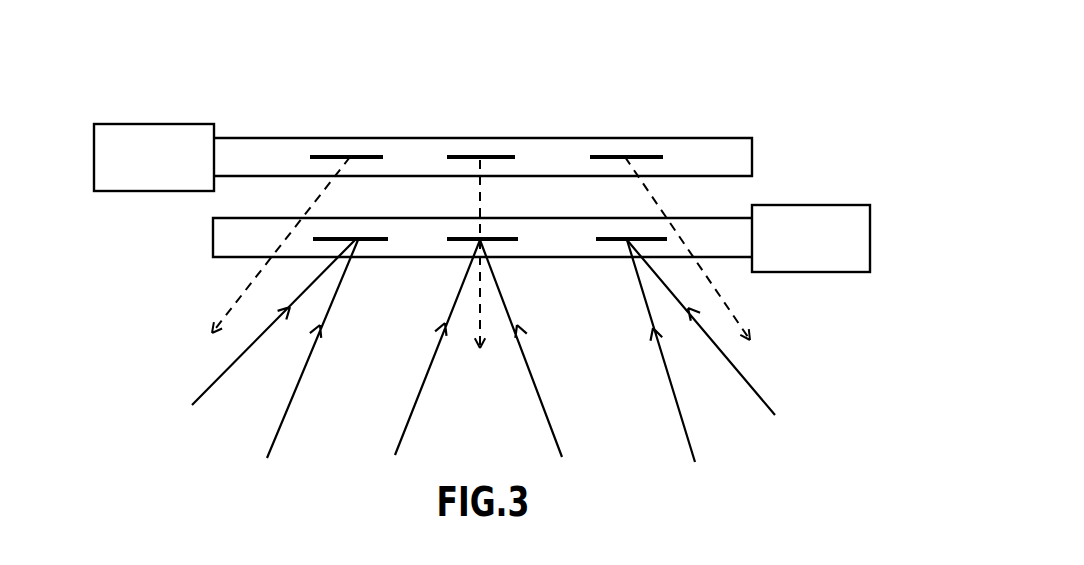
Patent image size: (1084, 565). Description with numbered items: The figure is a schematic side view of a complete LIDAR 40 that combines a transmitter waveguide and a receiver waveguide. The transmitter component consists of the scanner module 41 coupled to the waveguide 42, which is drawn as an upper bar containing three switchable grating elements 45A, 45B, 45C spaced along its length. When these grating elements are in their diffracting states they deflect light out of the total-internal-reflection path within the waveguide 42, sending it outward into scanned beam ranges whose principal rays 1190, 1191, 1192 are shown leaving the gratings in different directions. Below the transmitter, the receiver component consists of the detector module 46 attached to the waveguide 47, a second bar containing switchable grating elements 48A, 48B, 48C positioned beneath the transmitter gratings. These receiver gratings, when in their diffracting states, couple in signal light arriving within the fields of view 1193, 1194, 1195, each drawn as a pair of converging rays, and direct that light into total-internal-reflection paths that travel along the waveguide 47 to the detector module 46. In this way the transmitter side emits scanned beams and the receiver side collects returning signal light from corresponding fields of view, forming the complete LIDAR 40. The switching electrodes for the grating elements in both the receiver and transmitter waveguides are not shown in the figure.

The LIDAR 40 is at (857, 55).
The scanner module 41 is at (170, 123).
The waveguide 42 is at (753, 167).
The switchable grating element 45A is at (327, 153).
The switchable grating element 45B is at (458, 153).
The switchable grating element 45C is at (608, 153).
The detector module 46 is at (817, 203).
The waveguide 47 is at (210, 232).
The switchable grating element 48A is at (333, 238).
The switchable grating element 48B is at (483, 240).
The switchable grating element 48C is at (627, 240).
The principal ray 1190 is at (200, 337).
The principal ray 1191 is at (485, 347).
The principal ray 1192 is at (748, 323).
The FOV 1193 is at (275, 410).
The FOV 1194 is at (530, 442).
The FOV 1195 is at (732, 413).